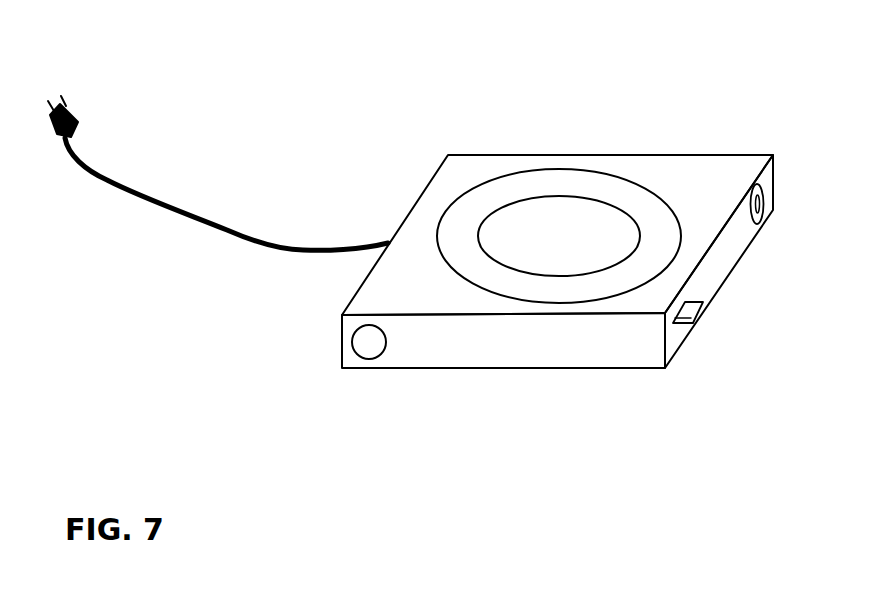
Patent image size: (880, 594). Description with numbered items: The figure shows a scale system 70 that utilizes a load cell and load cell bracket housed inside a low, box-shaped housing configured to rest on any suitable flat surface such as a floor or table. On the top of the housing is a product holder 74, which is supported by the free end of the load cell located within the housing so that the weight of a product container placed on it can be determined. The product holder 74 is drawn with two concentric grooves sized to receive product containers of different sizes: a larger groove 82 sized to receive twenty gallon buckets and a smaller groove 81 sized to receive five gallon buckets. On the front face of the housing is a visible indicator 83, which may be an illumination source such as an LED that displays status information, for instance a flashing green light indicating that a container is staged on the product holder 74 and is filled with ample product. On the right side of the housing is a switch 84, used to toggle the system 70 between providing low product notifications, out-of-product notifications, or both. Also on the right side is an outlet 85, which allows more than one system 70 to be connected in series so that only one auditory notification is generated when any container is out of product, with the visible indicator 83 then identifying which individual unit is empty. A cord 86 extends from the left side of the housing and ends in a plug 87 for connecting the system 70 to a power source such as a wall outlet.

The system 70 is at (422, 98).
The product holder 74 is at (568, 215).
The smaller groove 81 is at (533, 273).
The larger groove 82 is at (665, 200).
The visible indicator 83 is at (365, 347).
The switch 84 is at (693, 313).
The outlet 85 is at (758, 223).
The cord 86 is at (188, 210).
The plug 87 is at (63, 140).